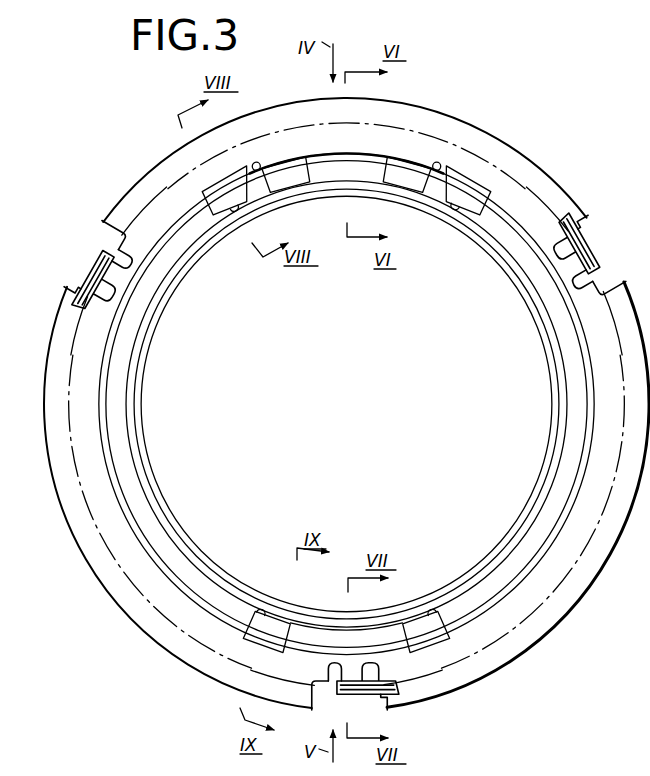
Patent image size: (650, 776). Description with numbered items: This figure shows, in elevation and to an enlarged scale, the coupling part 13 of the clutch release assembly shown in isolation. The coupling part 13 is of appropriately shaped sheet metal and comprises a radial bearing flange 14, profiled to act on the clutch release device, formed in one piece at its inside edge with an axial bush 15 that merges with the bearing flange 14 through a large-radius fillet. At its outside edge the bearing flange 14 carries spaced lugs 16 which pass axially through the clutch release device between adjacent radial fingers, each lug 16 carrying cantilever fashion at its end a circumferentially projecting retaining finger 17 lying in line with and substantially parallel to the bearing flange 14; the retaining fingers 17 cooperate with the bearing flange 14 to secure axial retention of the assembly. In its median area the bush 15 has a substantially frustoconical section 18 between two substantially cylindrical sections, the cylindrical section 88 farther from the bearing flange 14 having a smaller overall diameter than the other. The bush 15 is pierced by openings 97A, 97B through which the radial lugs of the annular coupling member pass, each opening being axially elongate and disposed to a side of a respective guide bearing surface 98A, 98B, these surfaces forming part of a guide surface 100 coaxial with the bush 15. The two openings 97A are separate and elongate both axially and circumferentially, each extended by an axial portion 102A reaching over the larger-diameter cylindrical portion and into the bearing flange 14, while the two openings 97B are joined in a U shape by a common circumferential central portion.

The coupling part 13 is at (461, 114).
The bearing flange 14 is at (348, 150).
The bush 15 is at (149, 456).
The lugs 16 is at (124, 240).
The retaining finger 17 is at (95, 282).
The frustoconical section 18 is at (552, 520).
The cylindrical section 88 is at (553, 415).
The openings 97A is at (445, 208).
The openings 97B is at (441, 612).
The guide bearing surface 98A is at (336, 170).
The guide bearing surface 98B is at (337, 640).
The guide surface 100 is at (517, 231).
The axial portion 102A is at (434, 162).